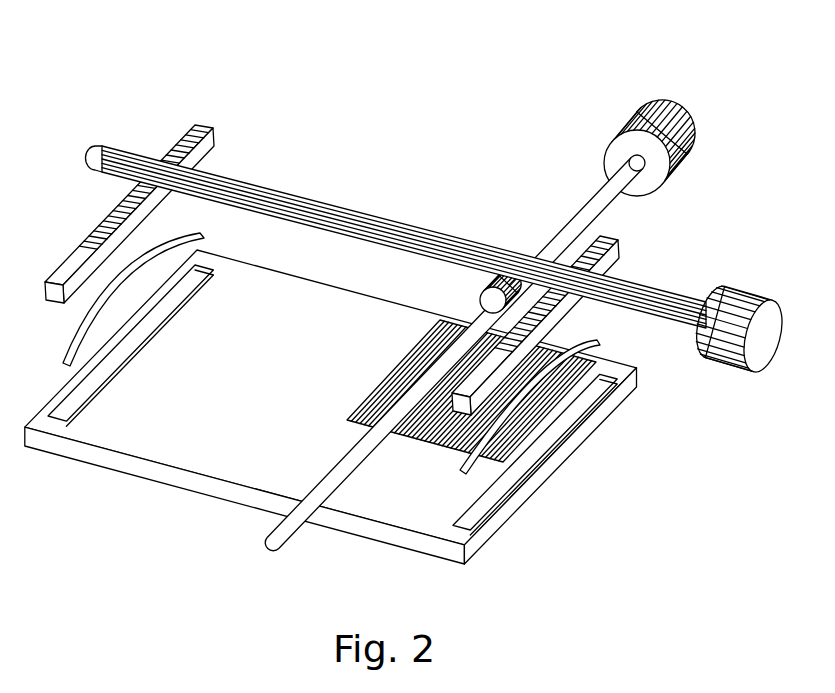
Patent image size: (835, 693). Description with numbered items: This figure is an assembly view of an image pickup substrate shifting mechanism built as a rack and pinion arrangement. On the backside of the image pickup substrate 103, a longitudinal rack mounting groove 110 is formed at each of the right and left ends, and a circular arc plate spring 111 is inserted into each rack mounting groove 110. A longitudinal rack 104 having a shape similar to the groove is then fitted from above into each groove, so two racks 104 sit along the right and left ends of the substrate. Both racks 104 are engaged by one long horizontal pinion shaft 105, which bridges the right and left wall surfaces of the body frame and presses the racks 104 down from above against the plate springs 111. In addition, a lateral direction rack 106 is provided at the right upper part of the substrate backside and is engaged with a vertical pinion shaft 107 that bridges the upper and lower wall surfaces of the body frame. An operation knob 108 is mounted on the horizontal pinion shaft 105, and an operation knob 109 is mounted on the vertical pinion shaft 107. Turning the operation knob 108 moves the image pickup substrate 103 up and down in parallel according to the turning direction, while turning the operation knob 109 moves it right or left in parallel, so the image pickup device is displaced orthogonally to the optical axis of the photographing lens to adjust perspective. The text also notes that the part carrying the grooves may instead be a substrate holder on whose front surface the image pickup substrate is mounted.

The image pickup substrate 103 is at (138, 478).
The longitudinal rack 104 is at (205, 124).
The horizontal pinion shaft 105 is at (397, 222).
The lateral direction rack 106 is at (417, 340).
The vertical pinion shaft 107 is at (480, 292).
The operation knob 108 is at (748, 291).
The operation knob 109 is at (663, 102).
The rack mounting groove 110 is at (67, 413).
The circular arc plate spring 111 is at (70, 337).